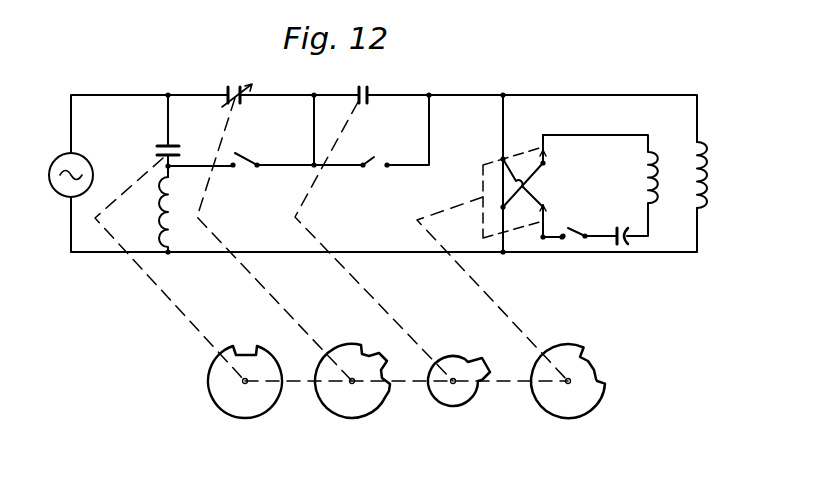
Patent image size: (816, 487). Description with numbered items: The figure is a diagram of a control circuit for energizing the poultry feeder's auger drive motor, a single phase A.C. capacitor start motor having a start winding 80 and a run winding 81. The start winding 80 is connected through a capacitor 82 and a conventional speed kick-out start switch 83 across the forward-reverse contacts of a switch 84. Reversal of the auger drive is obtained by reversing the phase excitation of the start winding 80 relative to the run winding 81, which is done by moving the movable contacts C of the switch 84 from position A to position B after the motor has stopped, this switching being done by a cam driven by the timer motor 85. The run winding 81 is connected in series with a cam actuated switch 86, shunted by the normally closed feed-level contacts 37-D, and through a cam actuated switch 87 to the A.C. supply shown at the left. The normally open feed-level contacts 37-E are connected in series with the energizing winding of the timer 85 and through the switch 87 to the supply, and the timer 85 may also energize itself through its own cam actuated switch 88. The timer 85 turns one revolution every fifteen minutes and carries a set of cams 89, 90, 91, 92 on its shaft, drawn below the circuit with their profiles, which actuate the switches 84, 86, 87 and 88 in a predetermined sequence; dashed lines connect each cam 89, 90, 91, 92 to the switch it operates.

The start winding 80 is at (655, 158).
The run winding 81 is at (707, 192).
The capacitor 82 is at (618, 227).
The speed kick-out start switch 83 is at (573, 228).
The forward-reverse switch 84 is at (488, 185).
The timer motor 85 is at (158, 218).
The cam actuated switch 86 is at (370, 88).
The cam actuated switch 87 is at (242, 83).
The cam actuated switch 88 is at (160, 146).
The cam 89 is at (236, 418).
The cam 90 is at (348, 418).
The cam 91 is at (455, 407).
The cam 92 is at (573, 418).
The normally closed contacts of feed-level switch 37-D is at (374, 157).
The normally open contacts of feed-level switch 37-E is at (243, 156).
The switch position A is at (517, 139).
The switch position B is at (503, 159).
The movable contacts C is at (543, 222).